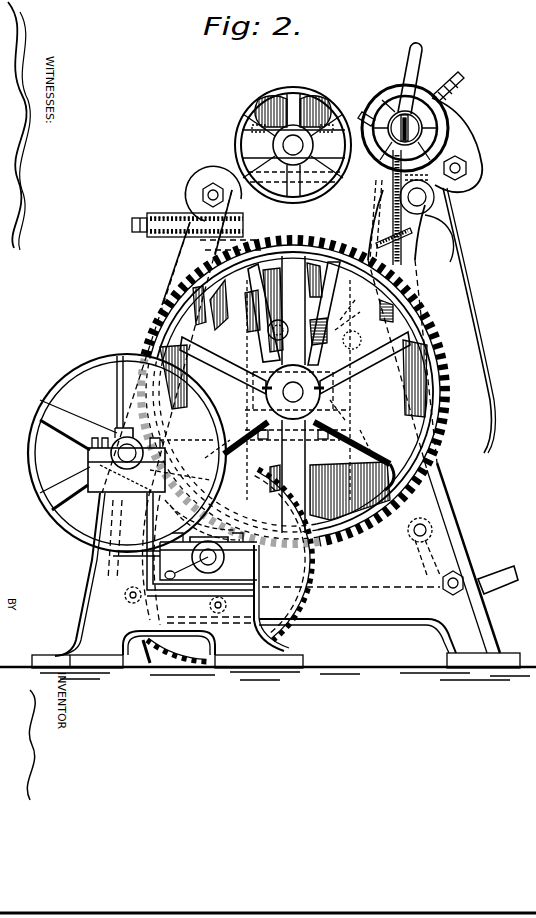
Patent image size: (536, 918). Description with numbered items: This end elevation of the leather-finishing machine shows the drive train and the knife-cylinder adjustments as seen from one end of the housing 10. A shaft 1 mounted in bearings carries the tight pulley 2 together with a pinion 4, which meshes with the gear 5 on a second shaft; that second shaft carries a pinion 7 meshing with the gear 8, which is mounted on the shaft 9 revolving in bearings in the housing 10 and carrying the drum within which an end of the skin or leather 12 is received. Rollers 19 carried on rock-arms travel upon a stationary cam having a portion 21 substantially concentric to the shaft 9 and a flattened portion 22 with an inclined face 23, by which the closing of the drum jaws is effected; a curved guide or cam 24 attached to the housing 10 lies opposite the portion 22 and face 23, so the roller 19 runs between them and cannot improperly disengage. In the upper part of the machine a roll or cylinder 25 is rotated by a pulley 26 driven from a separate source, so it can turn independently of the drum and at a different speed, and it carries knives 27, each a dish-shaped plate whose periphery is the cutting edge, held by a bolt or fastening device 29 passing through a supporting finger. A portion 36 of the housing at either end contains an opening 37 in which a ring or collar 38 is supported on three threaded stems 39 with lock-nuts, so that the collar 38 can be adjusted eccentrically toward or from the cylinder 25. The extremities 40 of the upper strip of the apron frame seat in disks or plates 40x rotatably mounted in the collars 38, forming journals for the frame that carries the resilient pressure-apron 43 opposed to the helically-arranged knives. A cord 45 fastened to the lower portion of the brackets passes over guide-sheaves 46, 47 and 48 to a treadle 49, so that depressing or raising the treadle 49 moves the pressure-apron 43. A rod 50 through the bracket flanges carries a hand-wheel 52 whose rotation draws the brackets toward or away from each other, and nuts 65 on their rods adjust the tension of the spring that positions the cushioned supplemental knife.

The shaft 1 is at (117, 433).
The tight pulley 2 is at (115, 360).
The pinion 4 is at (100, 460).
The gear 5 is at (285, 637).
The pinion 7 is at (236, 560).
The gear 8 is at (340, 537).
The shaft 9 is at (297, 397).
The housing 10 is at (428, 493).
The skin or leather 12 is at (478, 320).
The rollers 19 is at (268, 328).
The cam portion 21 is at (326, 446).
The flattened cam portion 22 is at (340, 350).
The inclined face 23 is at (252, 352).
The curved guide or cam 24 is at (342, 303).
The roll or cylinder 25 is at (295, 140).
The pulley 26 is at (292, 86).
The knives 27 is at (254, 102).
The bolt or fastening device 29 is at (237, 118).
The housing portion 36 is at (378, 90).
The openings 37 is at (406, 102).
The rings or collars 38 is at (418, 119).
The threaded stems 39 is at (372, 104).
The extremities of upper strip 40 is at (410, 134).
The disks or plates 40x is at (412, 127).
The pressure-apron 43 is at (402, 215).
The cord 45 is at (400, 238).
The guide-sheave 46 is at (243, 193).
The guide-sheave 47 is at (246, 396).
The guide-sheave 48 is at (432, 530).
The treadle 49 is at (494, 575).
The rod 50 is at (434, 186).
The hand-wheel 52 is at (436, 200).
The nuts 65 is at (143, 215).